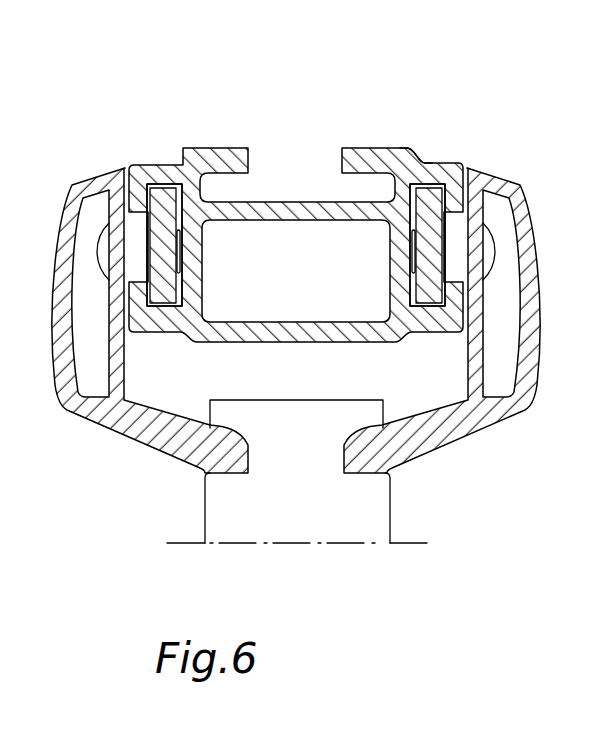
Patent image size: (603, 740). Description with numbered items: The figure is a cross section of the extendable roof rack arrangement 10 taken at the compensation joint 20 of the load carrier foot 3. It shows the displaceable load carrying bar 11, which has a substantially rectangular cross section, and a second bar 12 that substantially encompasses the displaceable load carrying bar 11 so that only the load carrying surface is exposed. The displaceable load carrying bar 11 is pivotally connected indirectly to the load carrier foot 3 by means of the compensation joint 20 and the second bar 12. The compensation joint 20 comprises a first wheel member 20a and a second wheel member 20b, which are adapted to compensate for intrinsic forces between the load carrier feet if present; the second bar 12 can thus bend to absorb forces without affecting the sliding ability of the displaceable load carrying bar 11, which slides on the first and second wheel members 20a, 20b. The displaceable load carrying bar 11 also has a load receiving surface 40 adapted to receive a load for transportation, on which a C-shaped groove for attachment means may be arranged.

The load carrier foot 3 is at (235, 507).
The extendable roof rack arrangement 10 is at (321, 250).
The displaceable load carrying bar 11 is at (397, 144).
The second bar 12 is at (516, 207).
The compensation joint 20 is at (333, 234).
The first wheel member 20a is at (160, 205).
The second wheel member 20b is at (433, 203).
The load receiving surface 40 is at (220, 148).